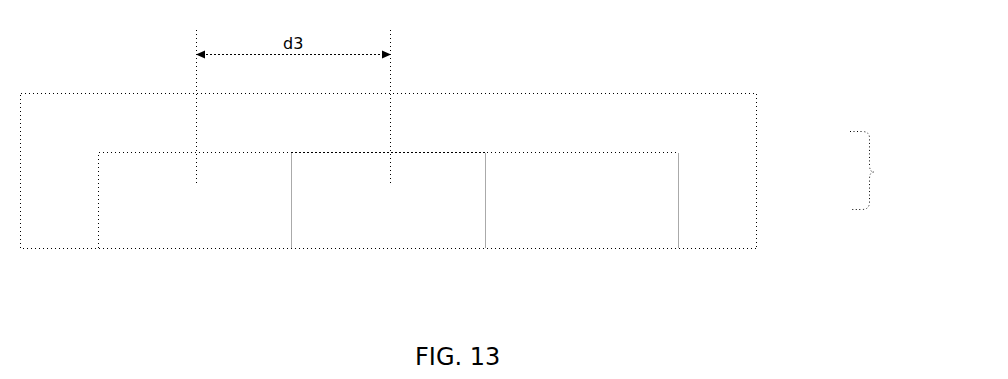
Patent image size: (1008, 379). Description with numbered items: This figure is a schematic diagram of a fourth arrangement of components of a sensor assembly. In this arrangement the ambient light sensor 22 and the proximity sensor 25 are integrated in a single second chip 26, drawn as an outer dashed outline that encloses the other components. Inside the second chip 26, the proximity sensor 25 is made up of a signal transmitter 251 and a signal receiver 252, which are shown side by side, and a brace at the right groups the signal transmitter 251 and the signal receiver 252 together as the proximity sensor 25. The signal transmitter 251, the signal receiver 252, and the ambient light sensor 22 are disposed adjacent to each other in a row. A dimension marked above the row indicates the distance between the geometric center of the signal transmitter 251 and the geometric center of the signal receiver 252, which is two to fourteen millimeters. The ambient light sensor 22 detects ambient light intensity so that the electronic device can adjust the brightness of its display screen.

The second chip 26 is at (688, 113).
The ambient light sensor 22 is at (550, 231).
The signal transmitter 251 is at (172, 229).
The signal receiver 252 is at (375, 231).
The proximity sensor 25 is at (856, 170).